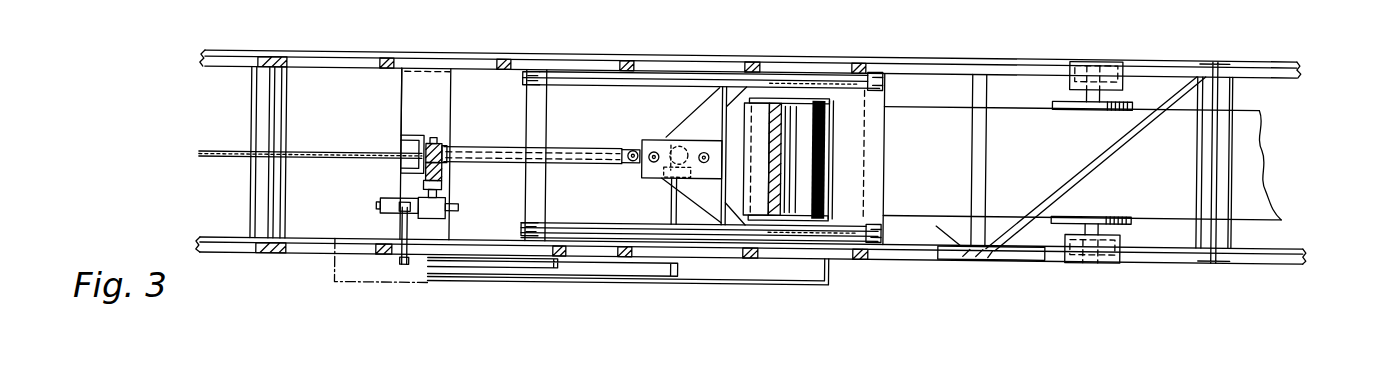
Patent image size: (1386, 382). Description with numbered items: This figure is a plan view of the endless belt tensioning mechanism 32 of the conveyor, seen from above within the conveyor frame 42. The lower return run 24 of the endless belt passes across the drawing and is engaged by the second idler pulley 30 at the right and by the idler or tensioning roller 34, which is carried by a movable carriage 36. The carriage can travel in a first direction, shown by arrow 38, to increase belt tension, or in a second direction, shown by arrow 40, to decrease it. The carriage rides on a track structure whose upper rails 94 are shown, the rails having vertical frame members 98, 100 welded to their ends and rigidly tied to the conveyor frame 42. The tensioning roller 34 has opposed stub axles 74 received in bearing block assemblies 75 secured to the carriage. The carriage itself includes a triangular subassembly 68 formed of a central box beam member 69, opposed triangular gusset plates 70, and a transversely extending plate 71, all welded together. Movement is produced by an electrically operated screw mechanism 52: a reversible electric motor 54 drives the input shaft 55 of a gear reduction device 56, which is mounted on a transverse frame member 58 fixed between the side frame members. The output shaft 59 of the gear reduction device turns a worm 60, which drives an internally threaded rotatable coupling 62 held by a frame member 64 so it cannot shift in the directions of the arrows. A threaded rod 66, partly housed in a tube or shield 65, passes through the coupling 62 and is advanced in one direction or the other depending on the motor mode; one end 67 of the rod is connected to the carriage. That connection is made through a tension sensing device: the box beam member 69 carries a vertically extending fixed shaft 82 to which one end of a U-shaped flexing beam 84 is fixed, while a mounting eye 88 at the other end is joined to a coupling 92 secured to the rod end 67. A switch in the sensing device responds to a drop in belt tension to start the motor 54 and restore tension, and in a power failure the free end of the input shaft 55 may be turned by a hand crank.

The lower return run 24 is at (1040, 97).
The second idler pulley 30 is at (1128, 213).
The endless belt tensioning mechanism 32 is at (345, 189).
The idler or tensioning roller 34 is at (822, 142).
The movable carriage 36 is at (667, 112).
The first direction arrow 38 is at (555, 107).
The second direction arrow 40 is at (602, 194).
The conveyor frame 42 is at (463, 60).
The electrically operated screw mechanism 52 is at (412, 121).
The reversible electric motor 54 is at (390, 211).
The input shaft 55 is at (458, 202).
The gear reduction device 56 is at (444, 213).
The transverse frame member 58 is at (453, 85).
The output shaft 59 is at (428, 190).
The worm 60 is at (442, 169).
The rotatable coupling 62 is at (444, 142).
The frame member 64 is at (443, 112).
The tube or shield 65 is at (548, 160).
The threaded rod 66 is at (353, 149).
The end of threaded rod 67 is at (628, 159).
The triangular subassembly 68 is at (663, 112).
The central box beam member 69 is at (688, 132).
The triangular gusset plates 70 is at (667, 125).
The transversely extending plate 71 is at (706, 99).
The stub axles 74 is at (835, 96).
The bearing block assemblies 75 is at (784, 66).
The fixed shaft 82 is at (698, 166).
The U-shaped flexing beam 84 is at (647, 133).
The mounting eye 88 is at (640, 174).
The coupling 92 is at (620, 143).
The upper rails 94 is at (702, 56).
The vertical frame member 98 is at (876, 64).
The vertical frame member 100 is at (537, 66).